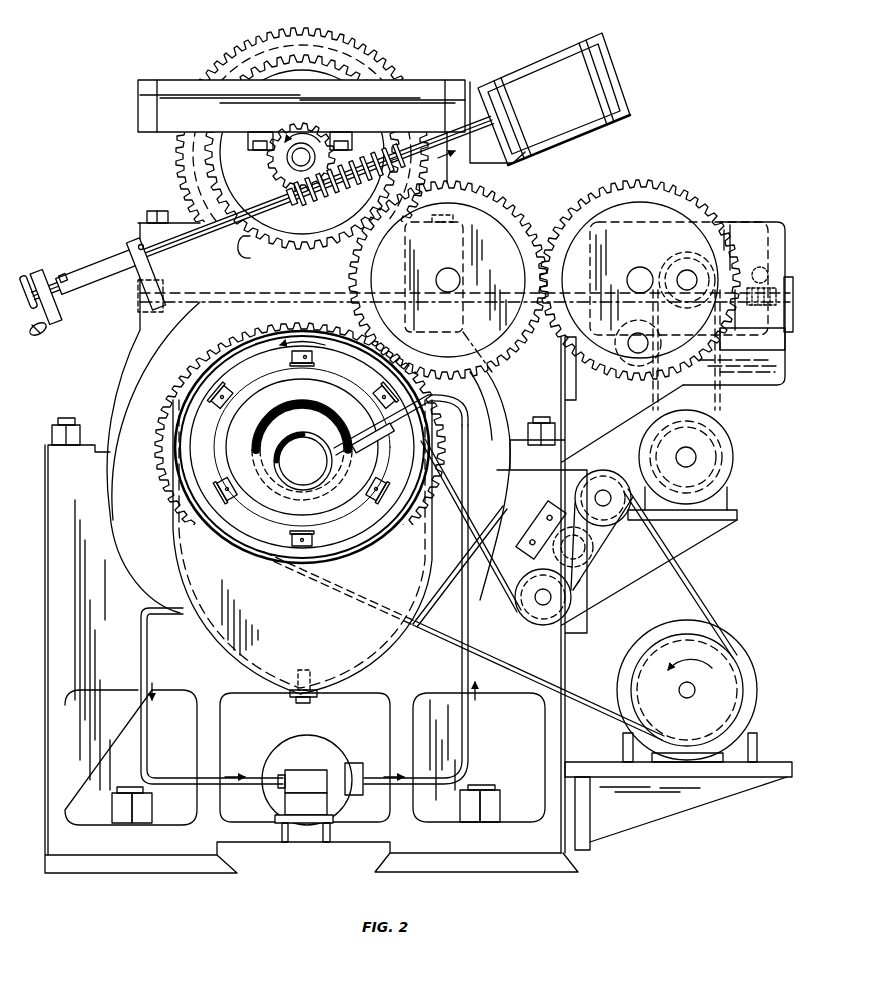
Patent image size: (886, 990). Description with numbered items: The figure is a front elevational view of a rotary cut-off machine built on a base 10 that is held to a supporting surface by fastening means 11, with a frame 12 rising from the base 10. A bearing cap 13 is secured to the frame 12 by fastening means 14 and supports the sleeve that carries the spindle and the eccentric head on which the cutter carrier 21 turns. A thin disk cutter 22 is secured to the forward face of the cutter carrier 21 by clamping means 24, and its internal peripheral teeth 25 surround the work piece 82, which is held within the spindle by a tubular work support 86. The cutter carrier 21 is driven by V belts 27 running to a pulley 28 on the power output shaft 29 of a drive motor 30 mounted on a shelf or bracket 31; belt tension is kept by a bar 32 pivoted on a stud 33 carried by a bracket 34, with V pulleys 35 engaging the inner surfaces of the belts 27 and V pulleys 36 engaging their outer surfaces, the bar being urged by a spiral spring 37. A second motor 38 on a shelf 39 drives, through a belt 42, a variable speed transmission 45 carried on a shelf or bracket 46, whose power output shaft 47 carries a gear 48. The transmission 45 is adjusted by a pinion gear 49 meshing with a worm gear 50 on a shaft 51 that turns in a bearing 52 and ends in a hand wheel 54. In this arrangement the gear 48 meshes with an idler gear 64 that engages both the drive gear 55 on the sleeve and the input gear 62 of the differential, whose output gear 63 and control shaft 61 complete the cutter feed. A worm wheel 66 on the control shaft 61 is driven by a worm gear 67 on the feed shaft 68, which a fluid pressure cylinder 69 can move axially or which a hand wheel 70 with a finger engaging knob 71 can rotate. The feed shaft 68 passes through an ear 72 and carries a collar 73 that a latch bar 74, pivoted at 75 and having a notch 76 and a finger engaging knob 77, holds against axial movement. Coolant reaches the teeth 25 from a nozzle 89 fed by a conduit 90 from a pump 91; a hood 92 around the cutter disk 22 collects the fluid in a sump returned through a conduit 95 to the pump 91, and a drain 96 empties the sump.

The base 10 is at (580, 863).
The fastening means 11 is at (498, 798).
The frame 12 is at (566, 657).
The bearing cap 13 is at (112, 388).
The fastening means 14 is at (62, 428).
The cutter carrier 21 is at (213, 438).
The disk cutter 22 is at (302, 447).
The clamping means 24 is at (322, 497).
The internal peripheral teeth 25 is at (273, 405).
The V belts 27 is at (584, 712).
The pulley 28 is at (655, 692).
The power output shaft 29 is at (697, 692).
The drive motor 30 is at (756, 676).
The shelf or bracket 31 is at (722, 790).
The bar 32 is at (604, 531).
The stud 33 is at (590, 553).
The bracket 34 is at (534, 523).
The V pulleys 35 is at (608, 474).
The V pulleys 36 is at (536, 611).
The spiral spring 37 is at (585, 574).
The second motor 38 is at (734, 457).
The shelf or support 39 is at (715, 528).
The belt 42 is at (720, 405).
The variable speed transmission 45 is at (748, 222).
The shelf or bracket 46 is at (778, 385).
The power output shaft 47 is at (636, 270).
The gear 48 is at (641, 186).
The pinion gear 49 is at (762, 268).
The worm gear 50 is at (764, 306).
The shaft 51 is at (91, 291).
The bearing 52 is at (790, 275).
The hand wheel 54 is at (28, 278).
The drive gear 55 is at (190, 388).
The control shaft 61 is at (310, 146).
The input gear 62 is at (212, 160).
The output gear 63 is at (239, 56).
The idler gear 64 is at (510, 213).
The worm wheel 66 is at (280, 176).
The worm gear 67 is at (352, 169).
The feed shaft 68 is at (217, 238).
The fluid pressure cylinder 69 is at (537, 67).
The hand wheel 70 is at (55, 326).
The finger engaging knob 71 is at (37, 340).
The ear 72 is at (162, 283).
The collar 73 is at (138, 292).
The latch bar 74 is at (101, 260).
The pivot 75 is at (147, 220).
The notch 76 is at (138, 247).
The finger engaging knob 77 is at (64, 274).
The work piece 82 is at (303, 461).
The tubular work support 86 is at (286, 444).
The nozzle 89 is at (369, 434).
The conduit 90 is at (467, 466).
The pump 91 is at (305, 770).
The hood 92 is at (226, 645).
The conduit 95 is at (141, 677).
The drain 96 is at (310, 704).